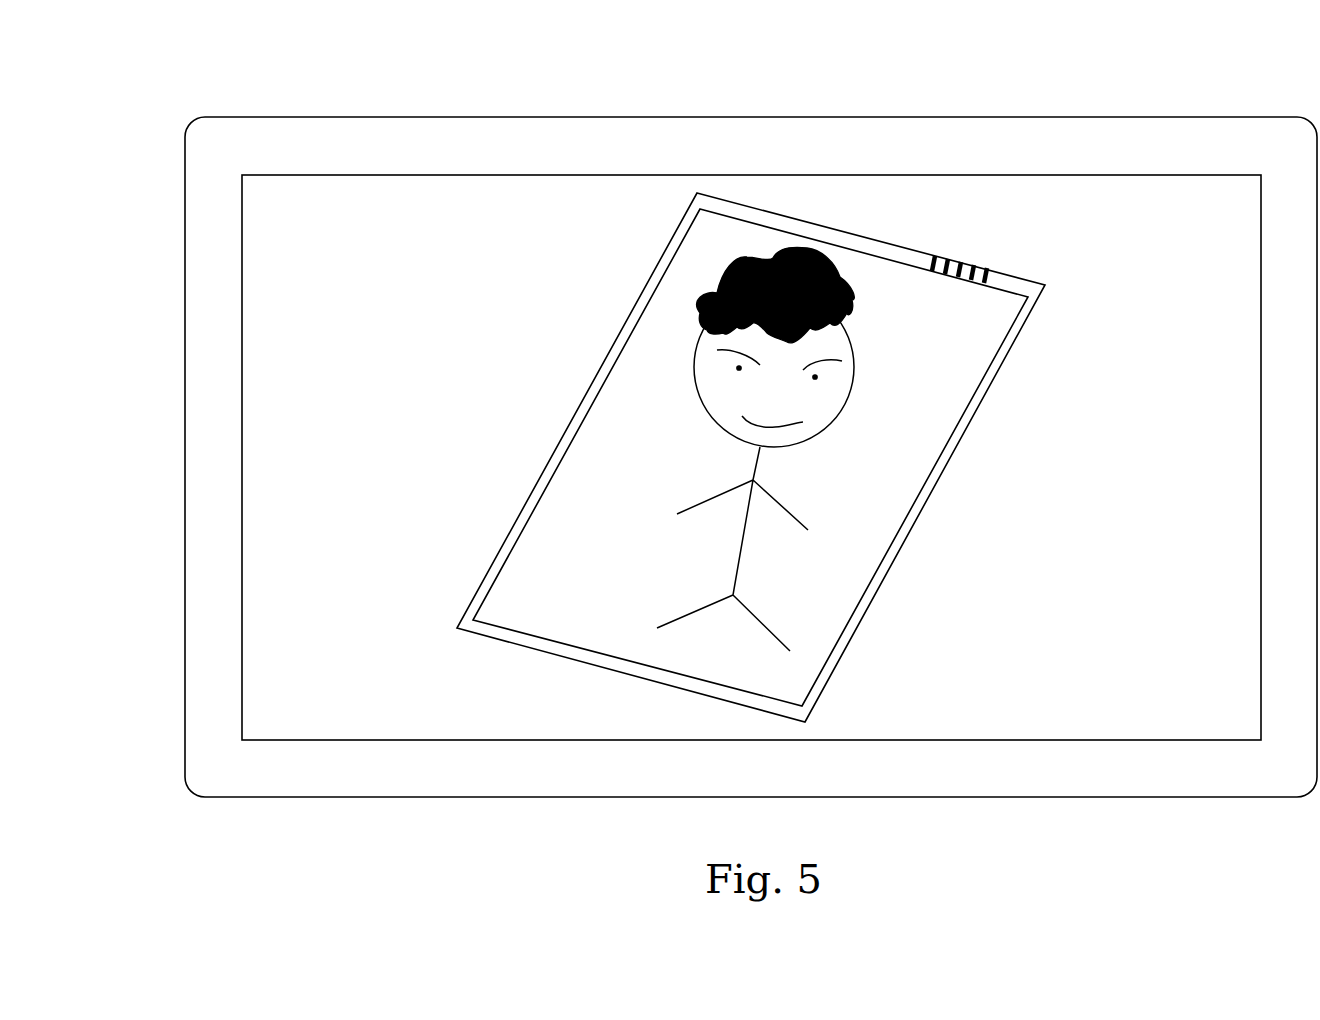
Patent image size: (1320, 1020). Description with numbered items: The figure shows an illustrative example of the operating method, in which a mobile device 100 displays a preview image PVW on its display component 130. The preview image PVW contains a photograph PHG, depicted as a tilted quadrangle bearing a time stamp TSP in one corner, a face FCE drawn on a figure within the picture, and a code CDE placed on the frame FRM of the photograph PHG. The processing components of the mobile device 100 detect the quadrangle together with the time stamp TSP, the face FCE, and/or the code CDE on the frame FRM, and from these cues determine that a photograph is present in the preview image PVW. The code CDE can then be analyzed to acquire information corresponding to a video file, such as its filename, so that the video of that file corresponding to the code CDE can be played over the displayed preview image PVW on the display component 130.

The mobile device 100 is at (461, 118).
The display component 130 is at (413, 175).
The preview image PVW is at (1148, 228).
The photograph PHG is at (830, 226).
The frame FRM is at (1042, 283).
The face FCE is at (857, 340).
The code CDE is at (966, 259).
The time stamp TSP is at (585, 598).